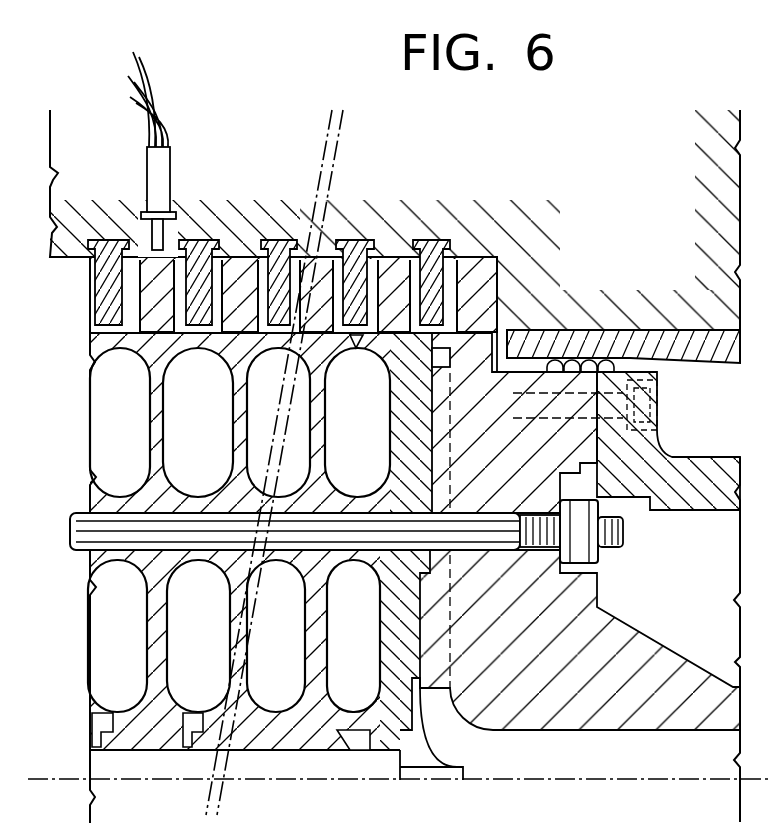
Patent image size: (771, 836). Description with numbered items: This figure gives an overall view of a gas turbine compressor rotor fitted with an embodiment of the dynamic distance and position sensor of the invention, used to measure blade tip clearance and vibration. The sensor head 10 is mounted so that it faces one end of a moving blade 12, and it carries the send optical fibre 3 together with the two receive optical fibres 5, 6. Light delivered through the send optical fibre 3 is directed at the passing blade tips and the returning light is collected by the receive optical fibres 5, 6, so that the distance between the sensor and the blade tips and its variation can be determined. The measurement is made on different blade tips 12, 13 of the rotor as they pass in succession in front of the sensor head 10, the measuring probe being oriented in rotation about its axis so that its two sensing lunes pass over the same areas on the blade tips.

The send optical fibre 3 is at (147, 88).
The receive optical fibre 5 is at (147, 68).
The receive optical fibre 6 is at (155, 113).
The sensor head 10 is at (163, 230).
The moving blade 12 is at (153, 290).
The blade tip 13 is at (242, 275).